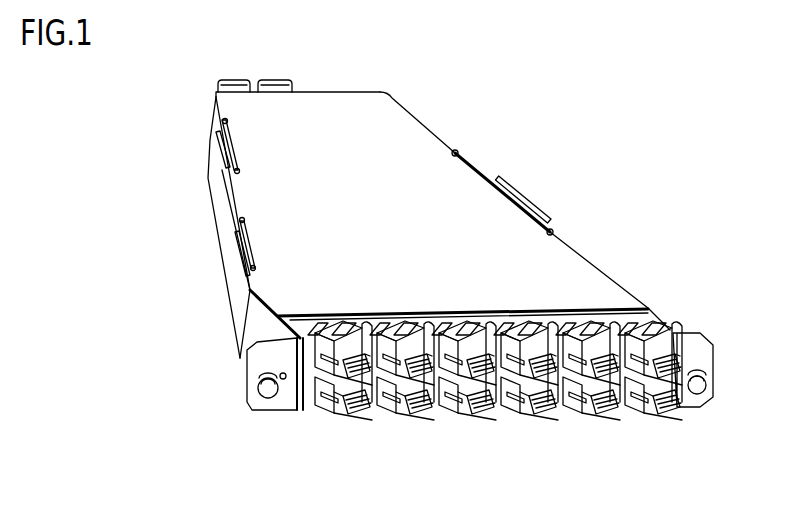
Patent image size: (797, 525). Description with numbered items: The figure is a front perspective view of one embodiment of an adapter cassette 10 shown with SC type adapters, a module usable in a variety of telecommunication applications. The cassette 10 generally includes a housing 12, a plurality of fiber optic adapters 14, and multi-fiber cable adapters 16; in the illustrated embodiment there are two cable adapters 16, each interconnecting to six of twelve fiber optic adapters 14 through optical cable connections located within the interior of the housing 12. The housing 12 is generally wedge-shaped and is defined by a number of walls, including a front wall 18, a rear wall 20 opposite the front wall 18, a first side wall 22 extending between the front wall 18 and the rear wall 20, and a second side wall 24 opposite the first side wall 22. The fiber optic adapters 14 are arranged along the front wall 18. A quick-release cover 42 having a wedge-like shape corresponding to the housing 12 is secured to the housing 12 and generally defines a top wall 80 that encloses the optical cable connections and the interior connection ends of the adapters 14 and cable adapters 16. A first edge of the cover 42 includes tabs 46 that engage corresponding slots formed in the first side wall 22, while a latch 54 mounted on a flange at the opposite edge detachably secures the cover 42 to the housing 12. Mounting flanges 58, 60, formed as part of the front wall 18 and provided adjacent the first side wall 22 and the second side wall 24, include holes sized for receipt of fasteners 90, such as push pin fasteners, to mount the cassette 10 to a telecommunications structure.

The adapter cassette 10 is at (580, 110).
The housing 12 is at (188, 173).
The fiber optic adapters 14 is at (412, 435).
The multi-fiber cable adapter 16 is at (273, 72).
The front wall 18 is at (302, 400).
The rear wall 20 is at (333, 92).
The first side wall 22 is at (238, 288).
The second side wall 24 is at (417, 121).
The quick-release cover 42 is at (558, 251).
The tabs 46 is at (217, 140).
The latch 54 is at (512, 190).
The mounting flange 58 is at (255, 398).
The mounting flange 60 is at (692, 395).
The top wall 80 is at (445, 192).
The fasteners 90 is at (262, 388).